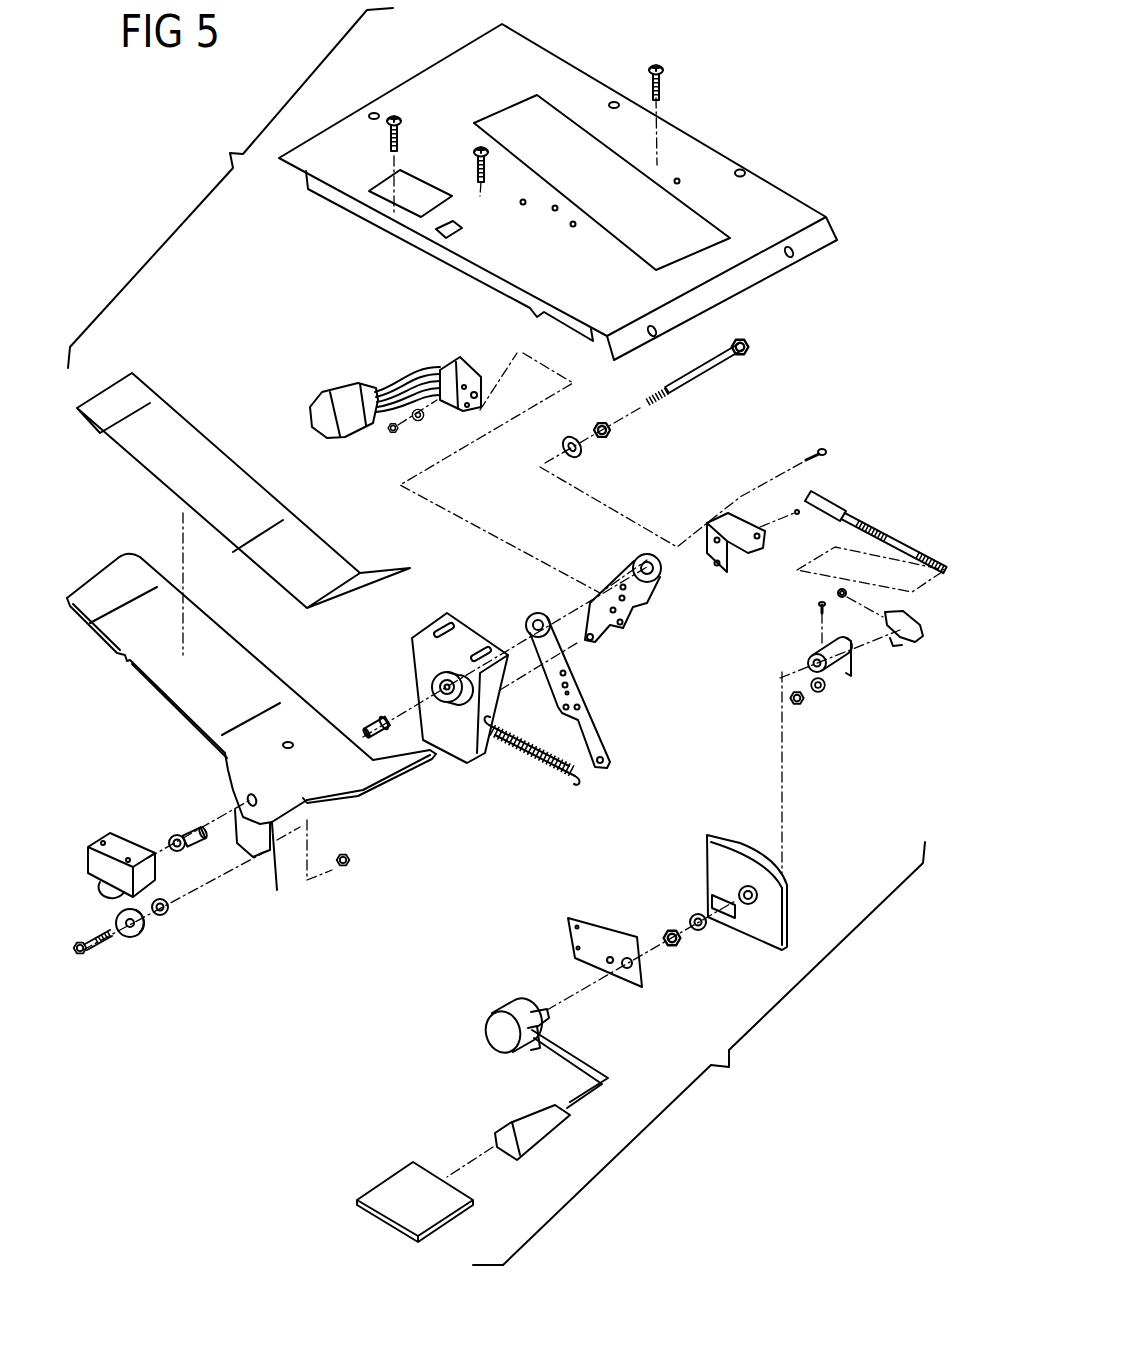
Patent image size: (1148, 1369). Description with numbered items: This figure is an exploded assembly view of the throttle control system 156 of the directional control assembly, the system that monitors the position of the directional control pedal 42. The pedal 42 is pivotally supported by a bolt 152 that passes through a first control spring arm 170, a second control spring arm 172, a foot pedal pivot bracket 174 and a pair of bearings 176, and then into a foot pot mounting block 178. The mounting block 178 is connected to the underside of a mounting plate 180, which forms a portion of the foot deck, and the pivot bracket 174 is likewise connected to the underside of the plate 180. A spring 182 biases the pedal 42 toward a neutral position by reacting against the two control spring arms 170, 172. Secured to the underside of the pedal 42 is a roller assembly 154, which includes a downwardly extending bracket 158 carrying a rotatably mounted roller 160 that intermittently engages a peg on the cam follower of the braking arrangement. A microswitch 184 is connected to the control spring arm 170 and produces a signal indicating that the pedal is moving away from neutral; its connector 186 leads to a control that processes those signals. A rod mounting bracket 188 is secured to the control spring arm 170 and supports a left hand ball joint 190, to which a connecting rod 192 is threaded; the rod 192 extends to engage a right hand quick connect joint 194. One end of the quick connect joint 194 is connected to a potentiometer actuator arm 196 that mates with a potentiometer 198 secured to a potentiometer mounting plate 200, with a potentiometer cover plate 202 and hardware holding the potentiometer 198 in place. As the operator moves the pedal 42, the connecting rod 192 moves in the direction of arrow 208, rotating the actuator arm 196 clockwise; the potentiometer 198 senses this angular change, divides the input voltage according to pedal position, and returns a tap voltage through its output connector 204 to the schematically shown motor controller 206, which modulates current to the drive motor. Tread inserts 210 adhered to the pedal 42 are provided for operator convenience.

The directional control pedal 42 is at (111, 580).
The bolt 152 is at (744, 345).
The roller assembly 154 is at (213, 962).
The throttle control system 156 is at (264, 258).
The bracket 158 is at (273, 855).
The roller 160 is at (131, 940).
The first control spring arm 170 is at (657, 583).
The second control spring arm 172 is at (597, 748).
The foot pedal pivot bracket 174 is at (460, 755).
The bearings 176 is at (371, 722).
The foot pot mounting block 178 is at (103, 843).
The mounting plate 180 is at (719, 168).
The spring 182 is at (553, 774).
The microswitch 184 is at (450, 366).
The connector 186 is at (336, 393).
The rod mounting bracket 188 is at (712, 532).
The left hand ball joint 190 is at (828, 493).
The connecting rod 192 is at (887, 545).
The right hand quick connect joint 194 is at (917, 643).
The potentiometer actuator arm 196 is at (848, 677).
The potentiometer 198 is at (497, 1013).
The potentiometer mounting plate 200 is at (586, 935).
The potentiometer cover plate 202 is at (773, 918).
The output connector 204 is at (510, 1123).
The motor controller 206 is at (434, 1210).
The arrow 208 is at (917, 504).
The tread inserts 210 is at (177, 438).